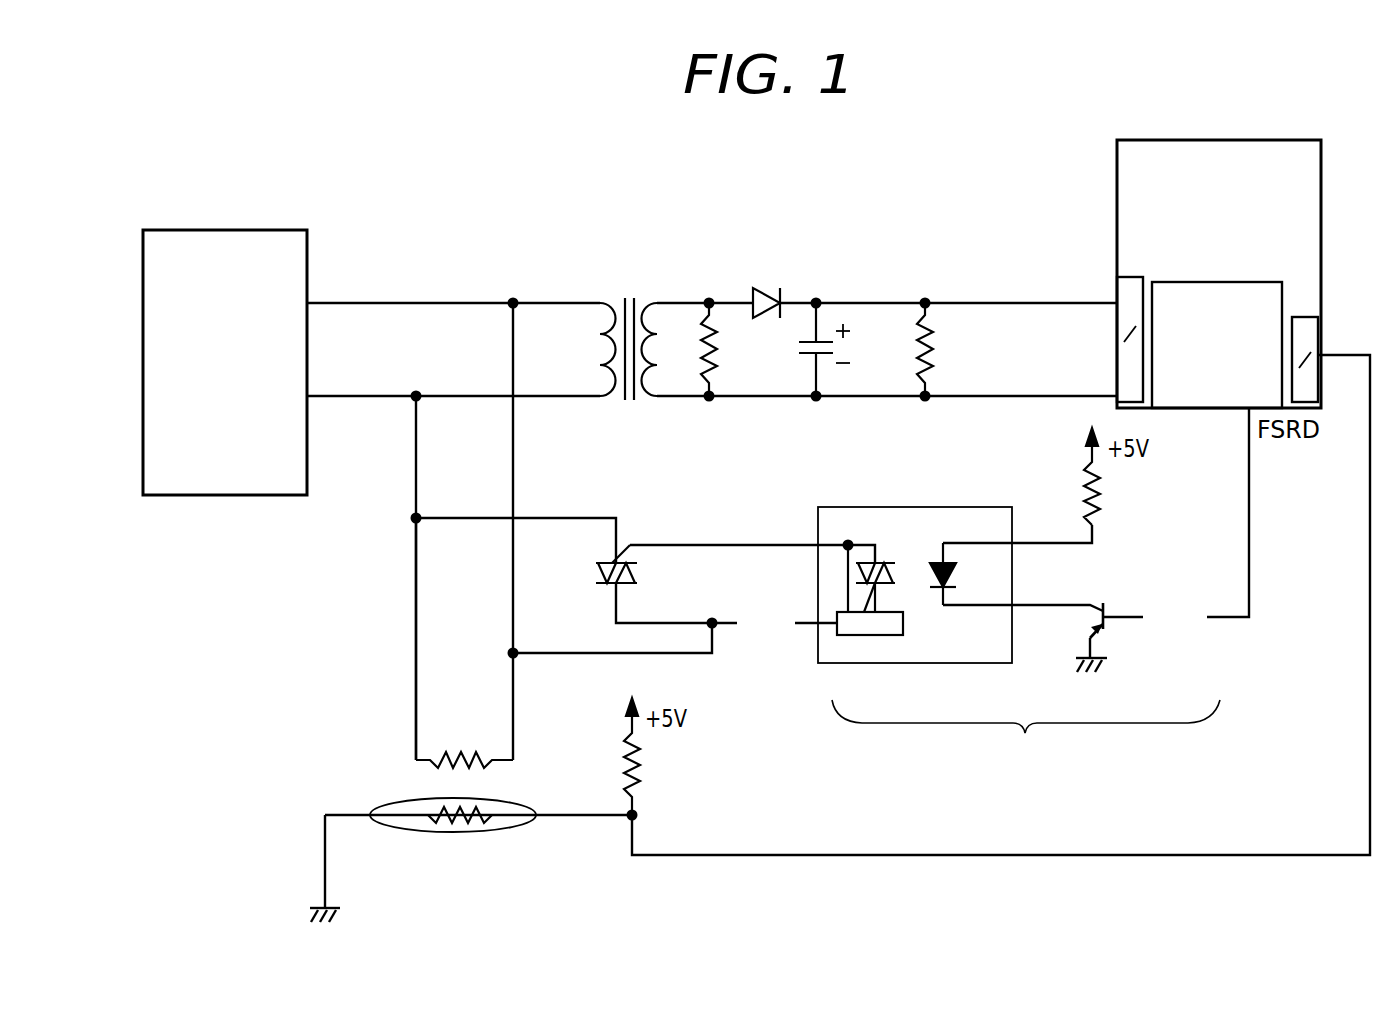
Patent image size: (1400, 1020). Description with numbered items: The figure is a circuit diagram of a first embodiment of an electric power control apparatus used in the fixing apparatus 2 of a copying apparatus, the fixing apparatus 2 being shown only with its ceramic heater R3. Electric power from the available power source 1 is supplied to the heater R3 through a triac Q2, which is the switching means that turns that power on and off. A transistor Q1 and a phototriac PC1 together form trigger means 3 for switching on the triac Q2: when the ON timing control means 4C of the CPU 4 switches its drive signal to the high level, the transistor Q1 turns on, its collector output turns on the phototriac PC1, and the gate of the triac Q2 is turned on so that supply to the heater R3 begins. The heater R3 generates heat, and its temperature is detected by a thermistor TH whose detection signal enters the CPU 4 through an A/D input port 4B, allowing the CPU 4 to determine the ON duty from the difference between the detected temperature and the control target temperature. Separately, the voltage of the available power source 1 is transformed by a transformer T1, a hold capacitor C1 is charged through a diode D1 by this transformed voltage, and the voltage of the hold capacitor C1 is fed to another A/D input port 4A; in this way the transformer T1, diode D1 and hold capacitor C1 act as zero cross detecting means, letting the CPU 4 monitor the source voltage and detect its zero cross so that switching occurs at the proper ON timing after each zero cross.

The available power source 1 is at (225, 362).
The fixing apparatus 2 is at (388, 705).
The trigger means 3 is at (1026, 738).
The CPU 4 is at (1298, 120).
The A/D input port 4A is at (1128, 276).
The A/D input port 4B is at (1305, 315).
The ON timing control means 4C is at (1233, 282).
The transformer T1 is at (633, 300).
The diode D1 is at (770, 292).
The hold capacitor C1 is at (812, 358).
The transistor Q1 is at (1106, 610).
The triac Q2 is at (596, 573).
The phototriac PC1 is at (975, 507).
The ceramic heater R3 is at (405, 760).
The thermistor TH is at (447, 833).